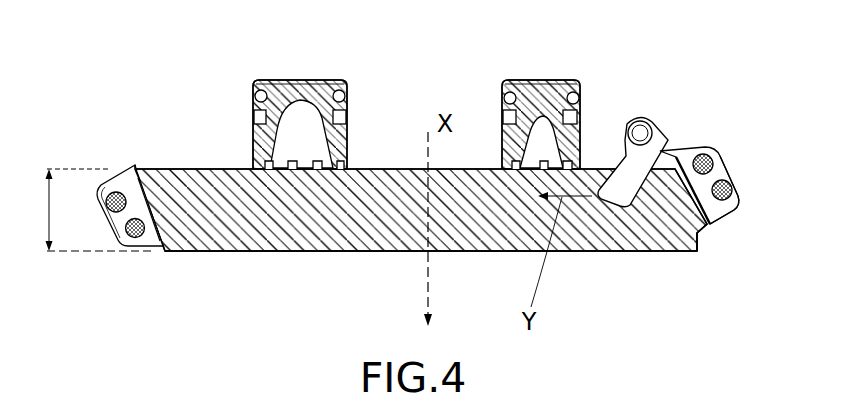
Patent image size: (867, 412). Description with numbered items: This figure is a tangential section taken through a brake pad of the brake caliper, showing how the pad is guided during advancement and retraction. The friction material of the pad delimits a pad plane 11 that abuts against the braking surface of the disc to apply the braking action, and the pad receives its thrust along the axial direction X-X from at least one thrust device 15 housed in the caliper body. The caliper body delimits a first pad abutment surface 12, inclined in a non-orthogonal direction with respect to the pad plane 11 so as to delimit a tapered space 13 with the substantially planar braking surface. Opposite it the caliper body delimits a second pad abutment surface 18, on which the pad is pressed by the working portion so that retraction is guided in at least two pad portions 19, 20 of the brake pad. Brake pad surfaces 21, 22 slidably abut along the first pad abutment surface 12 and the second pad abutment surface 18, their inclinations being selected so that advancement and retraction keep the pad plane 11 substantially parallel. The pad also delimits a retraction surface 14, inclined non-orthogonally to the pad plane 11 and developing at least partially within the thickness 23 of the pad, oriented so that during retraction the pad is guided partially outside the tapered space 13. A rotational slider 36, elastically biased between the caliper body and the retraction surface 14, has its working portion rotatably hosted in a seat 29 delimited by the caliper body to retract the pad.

The pad plane 11 is at (302, 253).
The first pad abutment surface 12 is at (735, 207).
The tapered space 13 is at (717, 227).
The retraction surface 14 is at (604, 172).
The thrust device 15 is at (487, 86).
The second pad abutment surface 18 is at (136, 238).
The pad portion 19 is at (620, 257).
The pad portion 20 is at (206, 257).
The brake pad surface 21 is at (703, 148).
The brake pad surface 22 is at (135, 166).
The thickness 23 is at (86, 210).
The seat 29 is at (647, 90).
The rotational slider 36 is at (672, 256).